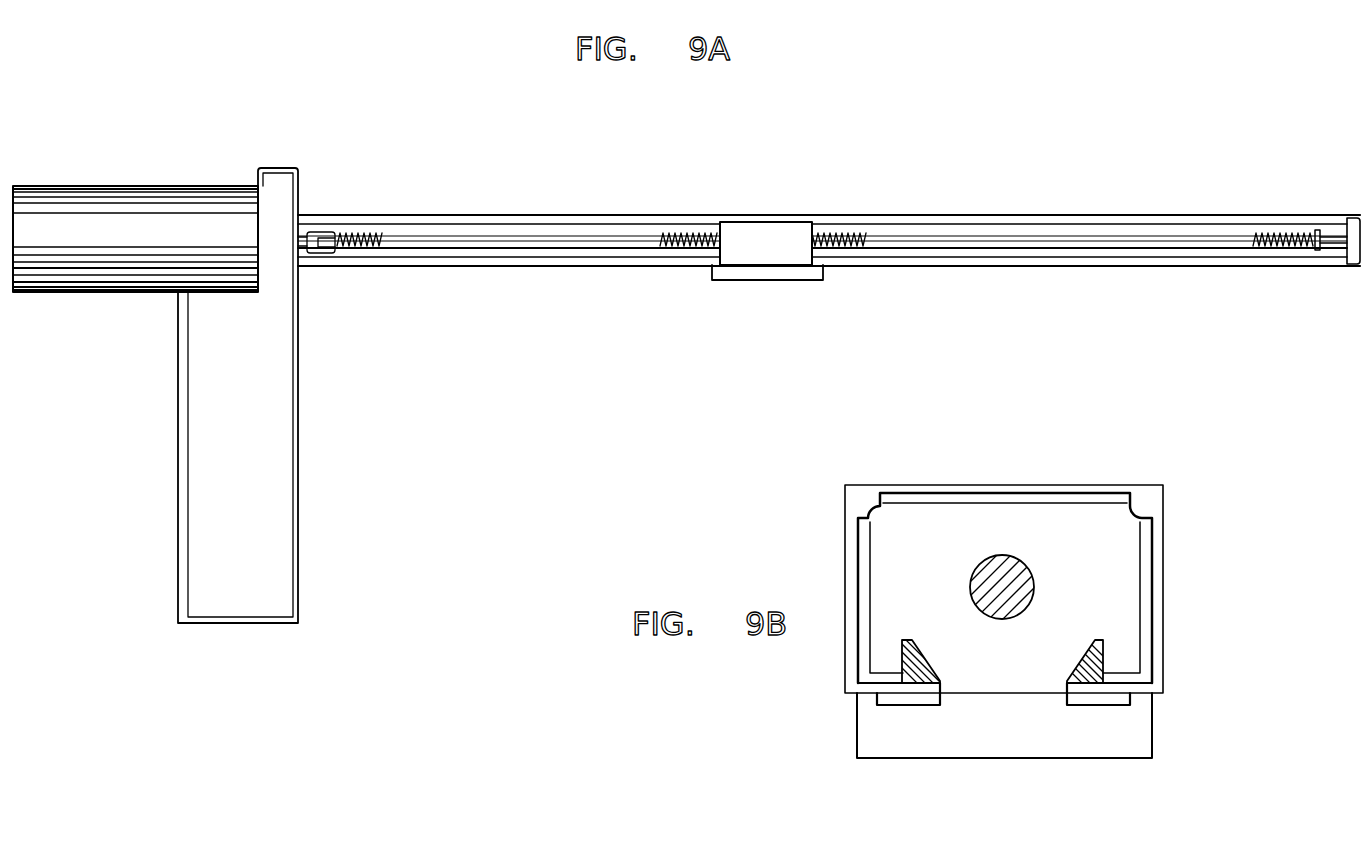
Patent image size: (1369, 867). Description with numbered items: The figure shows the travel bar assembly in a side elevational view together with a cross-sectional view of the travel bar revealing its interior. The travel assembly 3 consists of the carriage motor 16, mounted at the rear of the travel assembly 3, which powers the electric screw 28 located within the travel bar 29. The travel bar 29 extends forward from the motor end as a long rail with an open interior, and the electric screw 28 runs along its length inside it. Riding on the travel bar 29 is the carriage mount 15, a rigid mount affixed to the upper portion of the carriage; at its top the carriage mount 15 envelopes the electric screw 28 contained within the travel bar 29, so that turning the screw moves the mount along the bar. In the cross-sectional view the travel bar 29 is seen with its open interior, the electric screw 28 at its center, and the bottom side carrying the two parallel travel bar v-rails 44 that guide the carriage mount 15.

In FIG. 9A, the carriage motor 16 is at (138, 187).
In FIG. 9A, the travel assembly 3 is at (829, 234).
In FIG. 9A, the travel bar 29 is at (1085, 216).
In FIG. 9A, the electric screw 28 is at (1013, 243).
In FIG. 9B, the electric screw 28 is at (1010, 555).
In FIG. 9A, the carriage mount 15 is at (755, 280).
In FIG. 9B, the carriage mount 15 is at (857, 727).
In FIG. 9B, the travel bar v-rails 44 is at (923, 683).